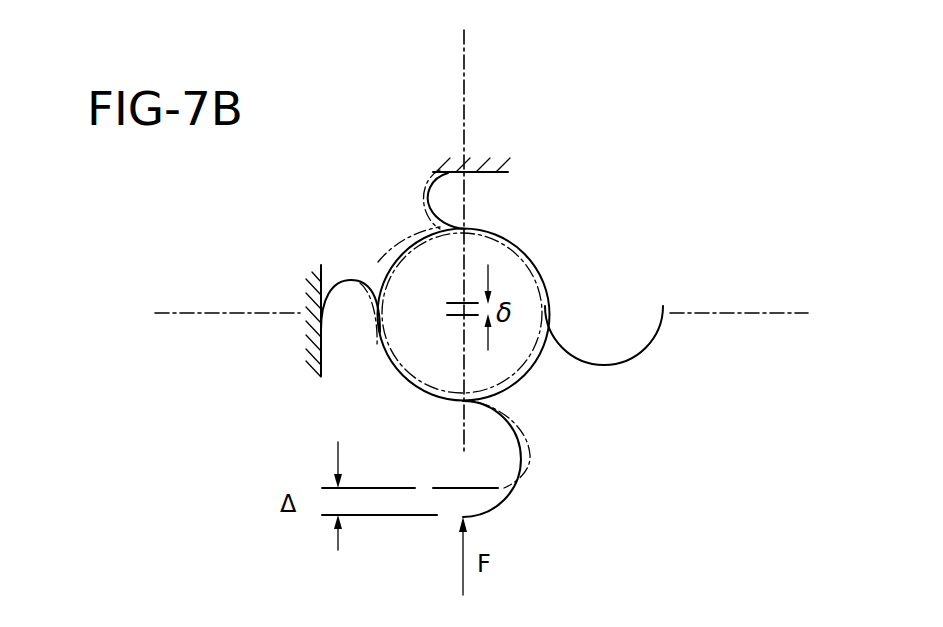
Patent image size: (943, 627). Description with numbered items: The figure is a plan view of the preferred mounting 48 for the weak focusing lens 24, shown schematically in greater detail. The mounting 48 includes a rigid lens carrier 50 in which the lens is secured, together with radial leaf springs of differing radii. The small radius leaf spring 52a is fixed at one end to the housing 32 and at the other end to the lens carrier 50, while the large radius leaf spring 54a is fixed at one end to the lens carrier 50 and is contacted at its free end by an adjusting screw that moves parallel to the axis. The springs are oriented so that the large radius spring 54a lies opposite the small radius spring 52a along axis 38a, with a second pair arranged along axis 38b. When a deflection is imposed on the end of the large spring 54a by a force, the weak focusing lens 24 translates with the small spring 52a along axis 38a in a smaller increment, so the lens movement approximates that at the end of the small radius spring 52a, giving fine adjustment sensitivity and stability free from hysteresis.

The weak focusing lens 24 is at (412, 352).
The housing 32 is at (310, 360).
The axis 38a is at (464, 50).
The axis 38b is at (740, 316).
The mounting 48 is at (346, 211).
The rigid lens carrier 50 is at (392, 278).
The small radius leaf spring 52a is at (430, 193).
The large radius leaf spring 54a is at (528, 458).